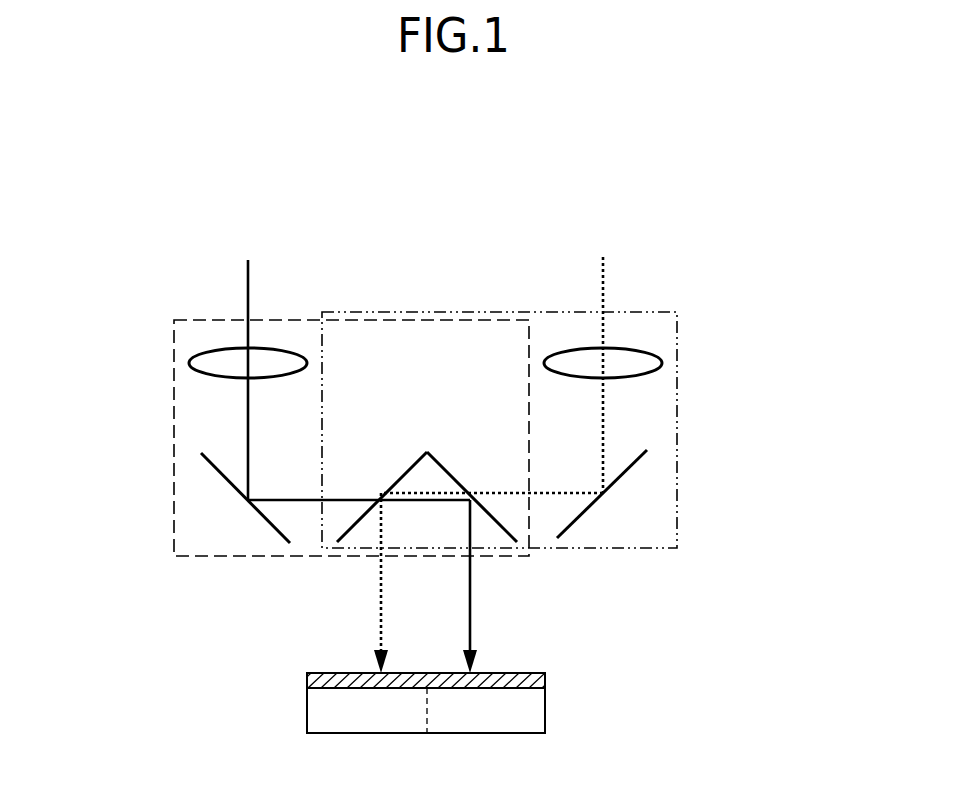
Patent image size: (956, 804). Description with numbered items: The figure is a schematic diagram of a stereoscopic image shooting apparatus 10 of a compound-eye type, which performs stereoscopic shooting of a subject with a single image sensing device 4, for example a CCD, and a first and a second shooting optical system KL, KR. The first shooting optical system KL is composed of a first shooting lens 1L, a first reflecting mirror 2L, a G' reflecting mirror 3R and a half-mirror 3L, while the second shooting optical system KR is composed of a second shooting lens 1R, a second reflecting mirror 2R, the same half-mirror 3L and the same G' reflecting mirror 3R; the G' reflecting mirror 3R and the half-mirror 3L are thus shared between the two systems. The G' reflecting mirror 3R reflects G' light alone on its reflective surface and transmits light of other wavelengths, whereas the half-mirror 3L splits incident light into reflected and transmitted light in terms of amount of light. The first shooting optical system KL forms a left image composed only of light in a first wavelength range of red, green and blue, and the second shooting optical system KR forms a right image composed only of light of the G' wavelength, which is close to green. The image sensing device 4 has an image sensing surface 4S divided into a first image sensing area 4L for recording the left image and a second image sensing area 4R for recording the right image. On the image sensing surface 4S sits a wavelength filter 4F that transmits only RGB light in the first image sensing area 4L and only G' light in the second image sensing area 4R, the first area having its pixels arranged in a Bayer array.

The stereoscopic image shooting apparatus 10 is at (851, 205).
The first shooting optical system KL is at (173, 423).
The second shooting optical system KR is at (677, 425).
The first shooting lens 1L is at (217, 360).
The second shooting lens 1R is at (632, 358).
The first reflecting mirror 2L is at (222, 477).
The second reflecting mirror 2R is at (623, 473).
The G' reflecting mirror 3R is at (411, 468).
The half-mirror 3L is at (443, 467).
The image sensing device 4 is at (421, 666).
The wavelength filter 4F is at (307, 680).
The image sensing surface 4S is at (527, 672).
The second image sensing area 4R is at (427, 652).
The first image sensing area 4L is at (427, 652).